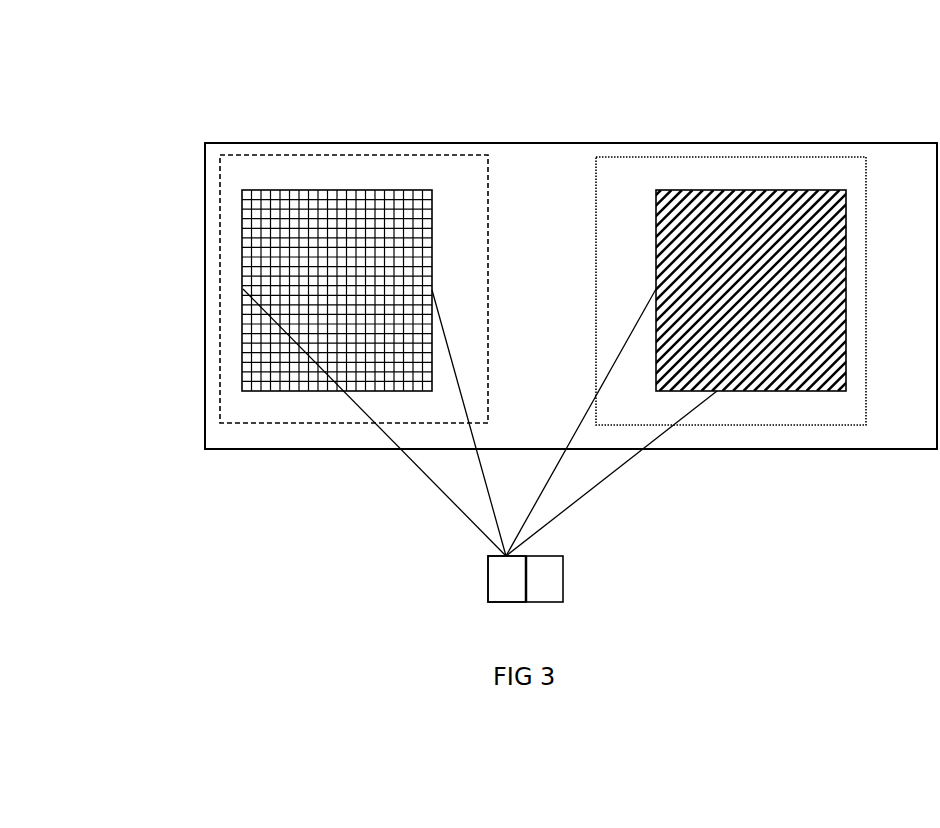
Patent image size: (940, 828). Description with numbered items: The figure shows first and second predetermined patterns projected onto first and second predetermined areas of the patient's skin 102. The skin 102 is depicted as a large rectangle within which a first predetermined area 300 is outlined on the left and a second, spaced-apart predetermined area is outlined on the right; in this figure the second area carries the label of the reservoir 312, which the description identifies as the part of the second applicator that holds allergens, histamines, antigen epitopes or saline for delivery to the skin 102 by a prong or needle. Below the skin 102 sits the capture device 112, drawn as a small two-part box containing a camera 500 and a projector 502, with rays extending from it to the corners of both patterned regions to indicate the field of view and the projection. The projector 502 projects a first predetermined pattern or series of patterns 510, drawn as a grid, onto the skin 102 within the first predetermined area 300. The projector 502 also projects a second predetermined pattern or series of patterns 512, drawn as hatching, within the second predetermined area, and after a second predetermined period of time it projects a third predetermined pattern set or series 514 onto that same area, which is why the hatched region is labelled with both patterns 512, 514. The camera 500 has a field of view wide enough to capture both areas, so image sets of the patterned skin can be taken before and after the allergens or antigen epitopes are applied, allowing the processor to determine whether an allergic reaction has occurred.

The patient's skin 102 is at (204, 451).
The first predetermined area 300 is at (278, 155).
The reservoir 312 is at (683, 157).
The first predetermined pattern or series of patterns 510 is at (410, 200).
The second predetermined pattern or series of patterns 512 is at (682, 198).
The third predetermined pattern set or series 514 is at (700, 243).
The capture device 112 is at (566, 616).
The camera 500 is at (565, 577).
The projector 502 is at (483, 577).